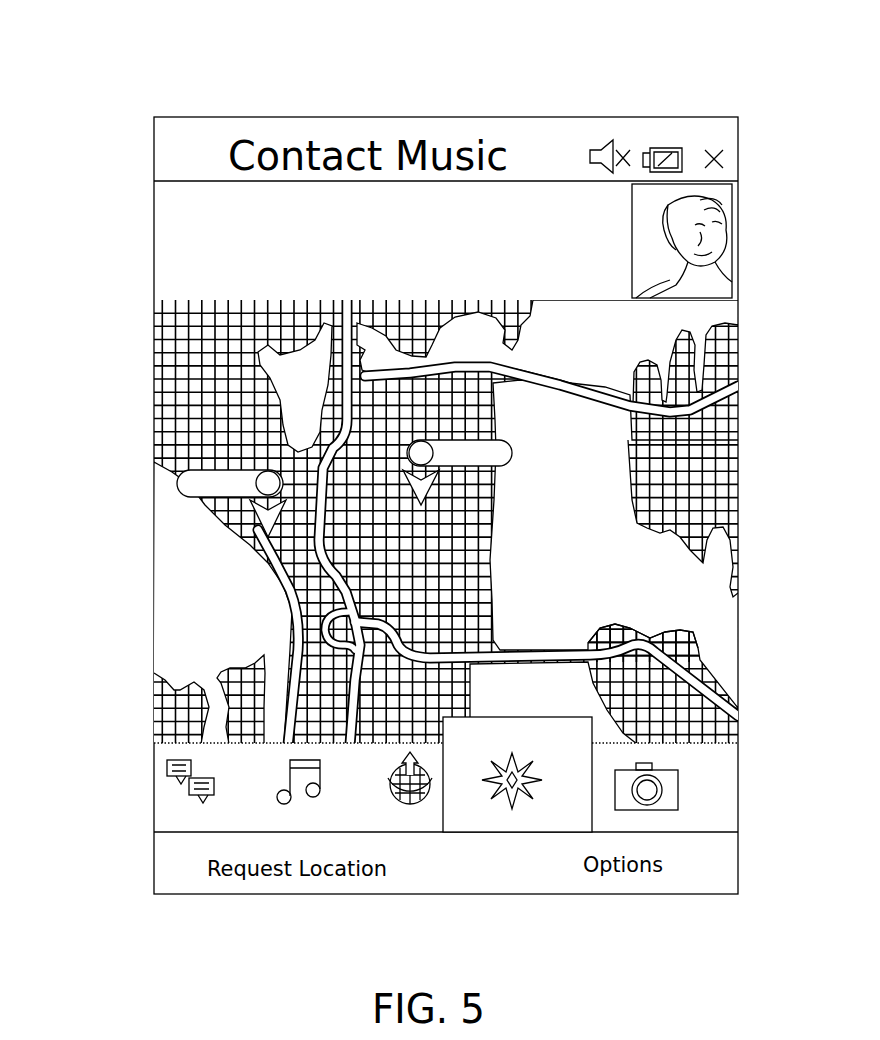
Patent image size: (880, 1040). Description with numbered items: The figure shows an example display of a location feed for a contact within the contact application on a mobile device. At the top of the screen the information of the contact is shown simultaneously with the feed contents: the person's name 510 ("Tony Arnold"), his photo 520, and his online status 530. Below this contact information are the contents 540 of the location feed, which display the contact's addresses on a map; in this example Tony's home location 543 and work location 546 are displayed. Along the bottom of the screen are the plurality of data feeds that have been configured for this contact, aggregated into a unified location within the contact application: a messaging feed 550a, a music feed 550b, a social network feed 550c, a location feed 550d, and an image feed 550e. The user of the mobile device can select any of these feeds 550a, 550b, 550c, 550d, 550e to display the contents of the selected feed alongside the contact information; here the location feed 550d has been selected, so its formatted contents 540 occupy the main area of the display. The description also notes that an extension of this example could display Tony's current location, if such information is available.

The person's name 510 is at (160, 215).
The photo 520 is at (723, 281).
The online status 530 is at (172, 270).
The contents 540 is at (435, 521).
The home location 543 is at (512, 445).
The work location 546 is at (177, 475).
The messaging feed 550a is at (172, 790).
The music feed 550b is at (280, 810).
The social network feed 550c is at (413, 815).
The location feed 550d is at (553, 817).
The image feed 550e is at (660, 812).